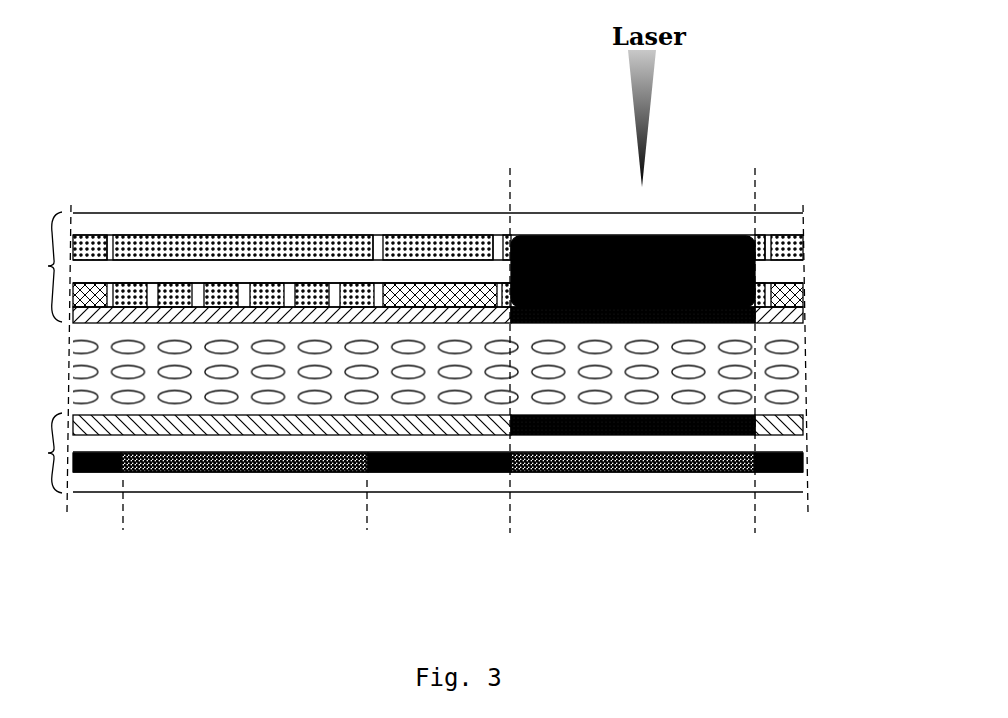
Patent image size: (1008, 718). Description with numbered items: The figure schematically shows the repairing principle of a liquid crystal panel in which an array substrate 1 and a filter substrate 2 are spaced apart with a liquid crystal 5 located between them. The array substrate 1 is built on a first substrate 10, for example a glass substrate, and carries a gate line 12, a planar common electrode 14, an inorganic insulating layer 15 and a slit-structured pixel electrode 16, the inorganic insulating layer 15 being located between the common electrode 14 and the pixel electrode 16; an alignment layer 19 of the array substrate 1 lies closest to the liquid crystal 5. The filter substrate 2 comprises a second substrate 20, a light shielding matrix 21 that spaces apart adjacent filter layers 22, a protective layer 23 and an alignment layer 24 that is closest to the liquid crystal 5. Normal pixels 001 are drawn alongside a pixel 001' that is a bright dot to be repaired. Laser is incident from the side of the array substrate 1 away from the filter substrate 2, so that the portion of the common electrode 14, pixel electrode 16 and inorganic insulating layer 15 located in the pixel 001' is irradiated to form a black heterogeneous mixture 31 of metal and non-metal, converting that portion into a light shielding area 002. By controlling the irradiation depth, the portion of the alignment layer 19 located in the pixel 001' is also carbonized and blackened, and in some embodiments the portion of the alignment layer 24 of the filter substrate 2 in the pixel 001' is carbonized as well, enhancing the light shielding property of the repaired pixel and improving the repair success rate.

The array substrate 1 is at (46, 267).
The filter substrate 2 is at (43, 453).
The liquid crystal 5 is at (785, 372).
The first substrate 10 is at (460, 228).
The gate line 12 is at (408, 292).
The common electrode 14 is at (232, 240).
The inorganic insulating layer 15 is at (290, 270).
The pixel electrode 16 is at (352, 295).
The alignment layer 19 is at (800, 318).
The second substrate 20 is at (472, 490).
The light shielding matrix 21 is at (407, 474).
The filter layer 22 is at (568, 462).
The protective layer 23 is at (328, 443).
The alignment layer 24 is at (803, 428).
The heterogeneous mixture 31 is at (678, 238).
The first region 001 is at (291, 545).
The light shielding area 002 is at (567, 185).
The pixel 001' is at (633, 545).